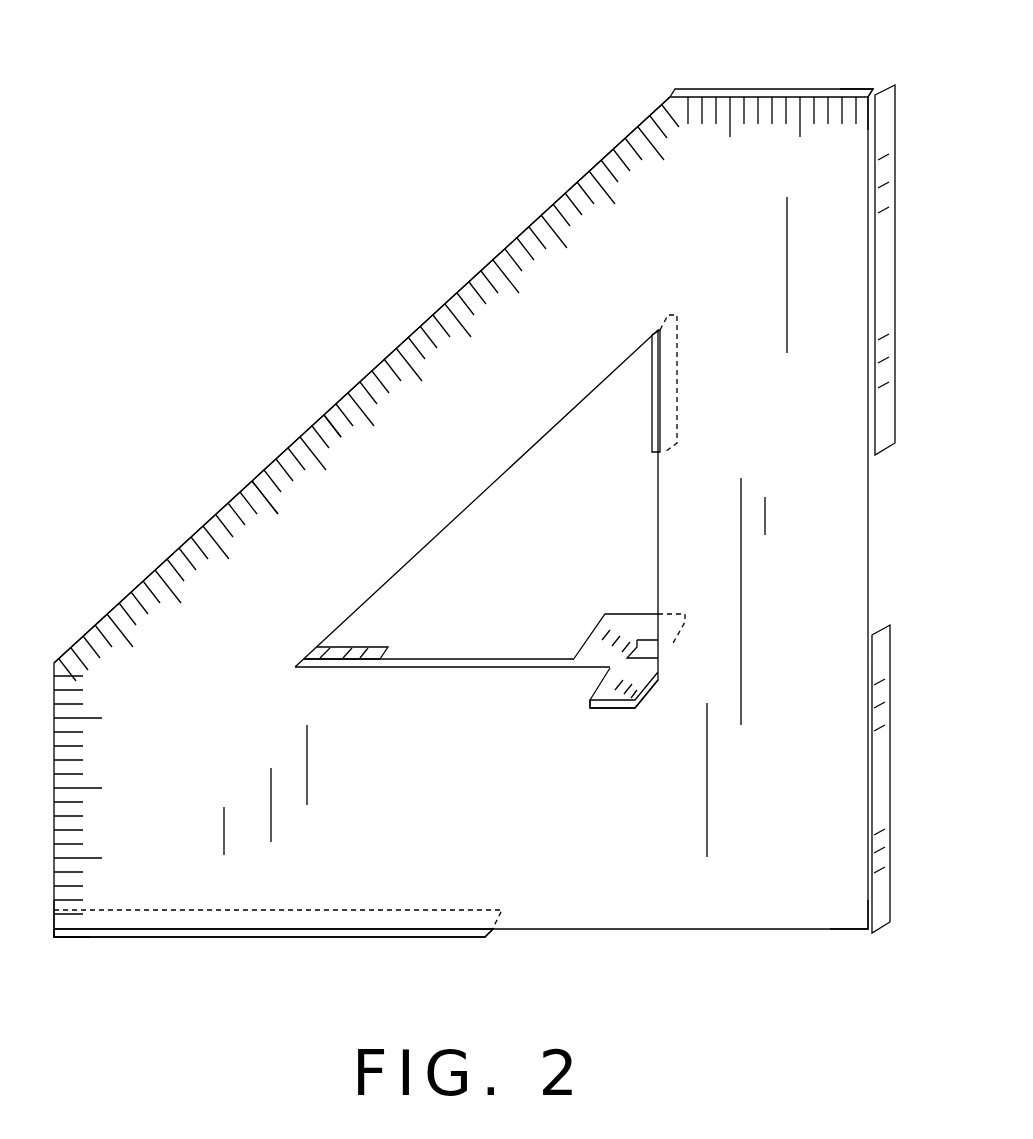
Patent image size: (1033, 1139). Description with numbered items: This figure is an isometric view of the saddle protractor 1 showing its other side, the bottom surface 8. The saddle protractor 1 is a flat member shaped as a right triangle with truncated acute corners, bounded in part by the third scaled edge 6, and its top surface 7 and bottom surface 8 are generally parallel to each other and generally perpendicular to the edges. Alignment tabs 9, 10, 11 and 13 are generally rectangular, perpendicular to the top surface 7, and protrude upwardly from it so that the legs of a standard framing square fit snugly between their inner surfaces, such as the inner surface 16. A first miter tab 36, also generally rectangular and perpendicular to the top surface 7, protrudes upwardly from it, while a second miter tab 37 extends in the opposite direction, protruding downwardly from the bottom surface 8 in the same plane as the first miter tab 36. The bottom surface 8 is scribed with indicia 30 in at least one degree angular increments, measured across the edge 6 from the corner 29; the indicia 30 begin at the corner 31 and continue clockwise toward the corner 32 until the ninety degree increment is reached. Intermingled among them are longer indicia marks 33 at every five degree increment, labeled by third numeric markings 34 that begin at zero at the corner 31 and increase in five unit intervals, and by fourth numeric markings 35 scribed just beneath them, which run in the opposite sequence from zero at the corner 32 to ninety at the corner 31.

The saddle protractor 1 is at (343, 188).
The third scaled edge 6 is at (460, 292).
The top surface 7 is at (722, 200).
The bottom surface 8 is at (672, 245).
The alignment tab 9 is at (895, 262).
The alignment tab 10 is at (892, 728).
The alignment tab 11 is at (343, 937).
The alignment tab 13 is at (652, 405).
The inner surface 16 is at (366, 645).
The corner 29 is at (866, 931).
The indicia 30 is at (342, 423).
The corner 31 is at (54, 936).
The corner 32 is at (863, 97).
The longer indicia marks 33 is at (278, 518).
The third numeric markings 34 is at (118, 913).
The fourth numeric markings 35 is at (165, 915).
The first miter tab 36 is at (594, 631).
The second miter tab 37 is at (600, 710).